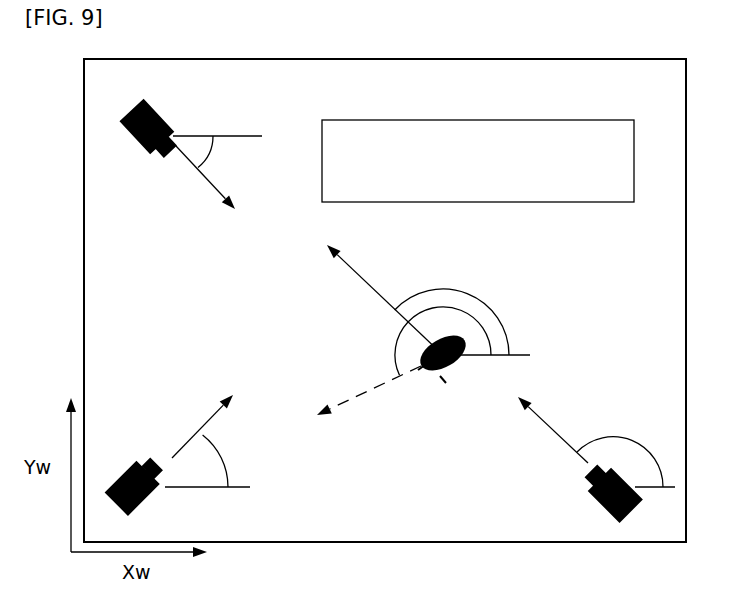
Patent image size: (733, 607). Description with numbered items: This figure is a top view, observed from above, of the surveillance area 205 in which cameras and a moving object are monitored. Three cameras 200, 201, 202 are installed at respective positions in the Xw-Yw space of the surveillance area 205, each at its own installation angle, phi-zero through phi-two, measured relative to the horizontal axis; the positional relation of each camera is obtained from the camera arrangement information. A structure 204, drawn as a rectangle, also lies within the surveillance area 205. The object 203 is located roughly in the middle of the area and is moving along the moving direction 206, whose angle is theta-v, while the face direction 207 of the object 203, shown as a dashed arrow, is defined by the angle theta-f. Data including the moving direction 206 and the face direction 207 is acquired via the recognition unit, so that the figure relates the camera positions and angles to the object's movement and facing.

The camera 200 is at (160, 119).
The camera 201 is at (157, 497).
The camera 202 is at (592, 497).
The object 203 is at (441, 377).
The structure 204 is at (510, 120).
The surveillance area 205 is at (453, 542).
The moving direction 206 is at (367, 295).
The face direction 207 is at (352, 398).